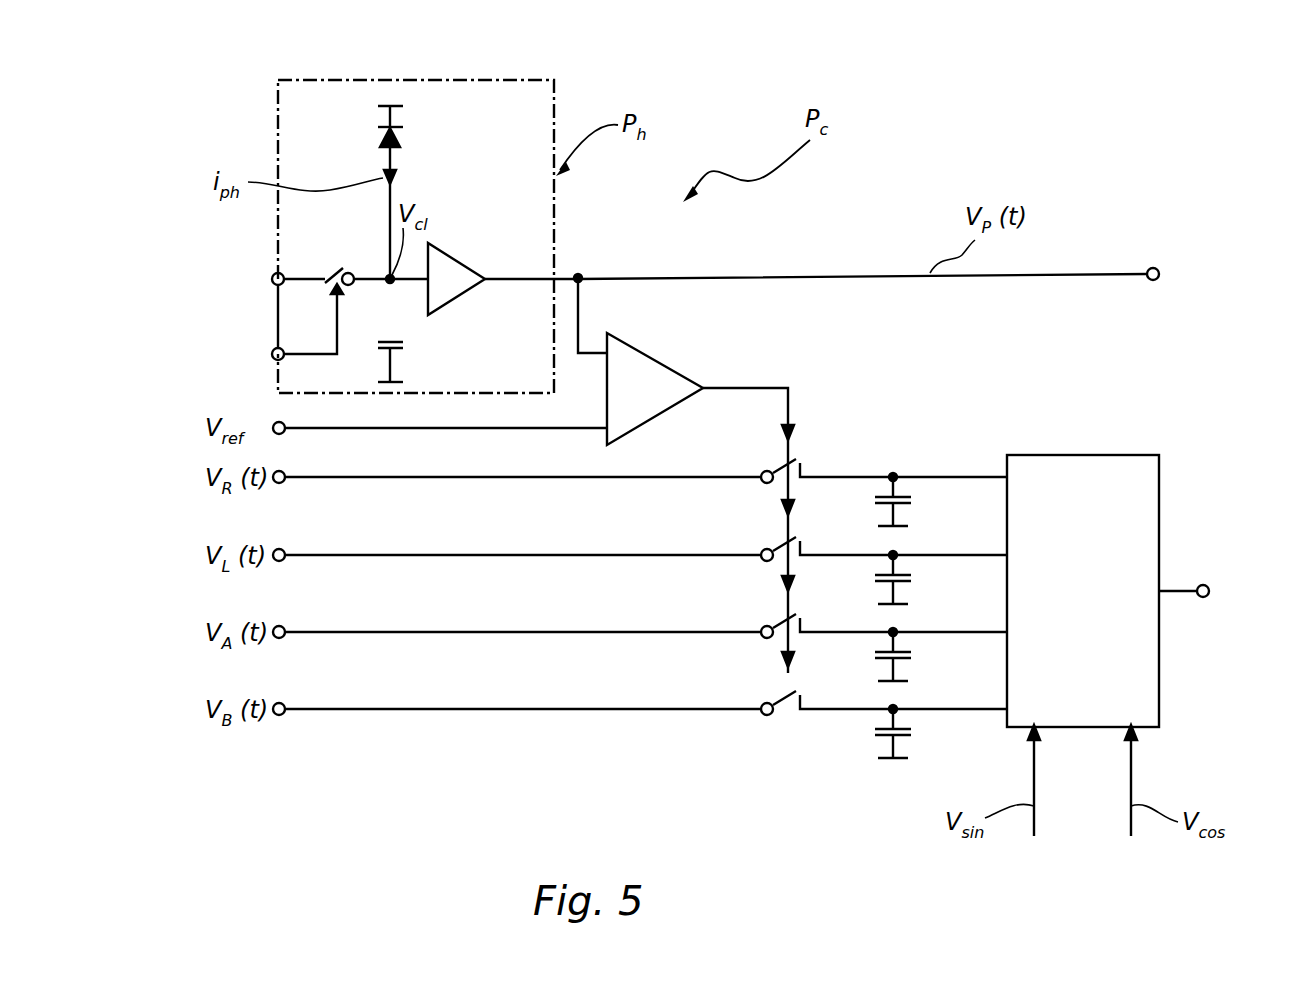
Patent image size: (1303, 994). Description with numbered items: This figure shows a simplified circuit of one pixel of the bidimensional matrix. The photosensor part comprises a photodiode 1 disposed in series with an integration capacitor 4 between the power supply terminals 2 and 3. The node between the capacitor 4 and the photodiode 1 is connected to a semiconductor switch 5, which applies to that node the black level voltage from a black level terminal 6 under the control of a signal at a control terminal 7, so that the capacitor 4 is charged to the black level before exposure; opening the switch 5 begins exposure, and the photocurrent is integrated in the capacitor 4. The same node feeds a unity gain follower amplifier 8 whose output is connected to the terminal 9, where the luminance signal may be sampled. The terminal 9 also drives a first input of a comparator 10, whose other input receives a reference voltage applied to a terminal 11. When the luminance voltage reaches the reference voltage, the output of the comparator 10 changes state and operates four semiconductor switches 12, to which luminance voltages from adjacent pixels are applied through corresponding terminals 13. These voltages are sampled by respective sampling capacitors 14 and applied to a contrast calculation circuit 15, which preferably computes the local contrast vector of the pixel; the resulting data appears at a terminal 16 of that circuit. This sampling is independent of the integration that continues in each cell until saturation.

The photodiode 1 is at (384, 136).
The power supply terminal 2 is at (396, 104).
The power supply terminal 3 is at (400, 374).
The integration capacitor 4 is at (400, 338).
The semiconductor switch 5 is at (334, 283).
The black level terminal 6 is at (272, 279).
The control terminal 7 is at (272, 354).
The follower amplifier 8 is at (442, 262).
The terminal 9 is at (1159, 270).
The comparator 10 is at (650, 368).
The terminal 11 is at (283, 434).
The semiconductor switches 12 is at (805, 447).
The terminals 13 is at (283, 483).
The sampling capacitors 14 is at (903, 505).
The contrast calculation circuit 15 is at (1040, 455).
The terminal 16 is at (1209, 588).